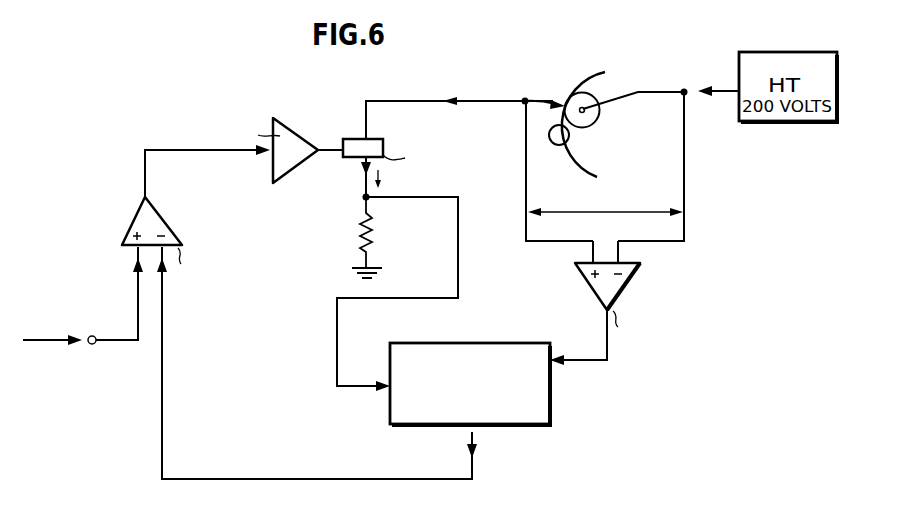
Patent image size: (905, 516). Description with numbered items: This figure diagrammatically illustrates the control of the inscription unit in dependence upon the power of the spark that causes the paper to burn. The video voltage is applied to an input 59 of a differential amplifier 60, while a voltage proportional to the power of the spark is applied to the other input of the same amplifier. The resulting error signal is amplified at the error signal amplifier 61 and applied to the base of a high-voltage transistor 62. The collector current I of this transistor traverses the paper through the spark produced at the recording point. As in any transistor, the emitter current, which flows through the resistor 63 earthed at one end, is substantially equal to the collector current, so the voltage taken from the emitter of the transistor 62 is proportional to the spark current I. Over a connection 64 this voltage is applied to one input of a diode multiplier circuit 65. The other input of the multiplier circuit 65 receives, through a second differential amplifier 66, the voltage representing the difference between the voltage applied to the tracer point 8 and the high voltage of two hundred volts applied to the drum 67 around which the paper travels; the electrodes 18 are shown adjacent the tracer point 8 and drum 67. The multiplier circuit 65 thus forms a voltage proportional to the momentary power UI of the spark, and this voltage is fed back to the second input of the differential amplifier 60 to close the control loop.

The tracer point 8 is at (554, 97).
The deflection electrode 18 is at (591, 71).
The input 59 is at (92, 345).
The differential amplifier 60 is at (140, 222).
The error signal amplifier 61 is at (283, 123).
The high-voltage transistor 62 is at (385, 143).
The resistor 63 is at (362, 233).
The feedback connection 64 is at (458, 246).
The diode multiplier circuit 65 is at (500, 343).
The differential amplifier 66 is at (624, 283).
The drum 67 is at (594, 117).